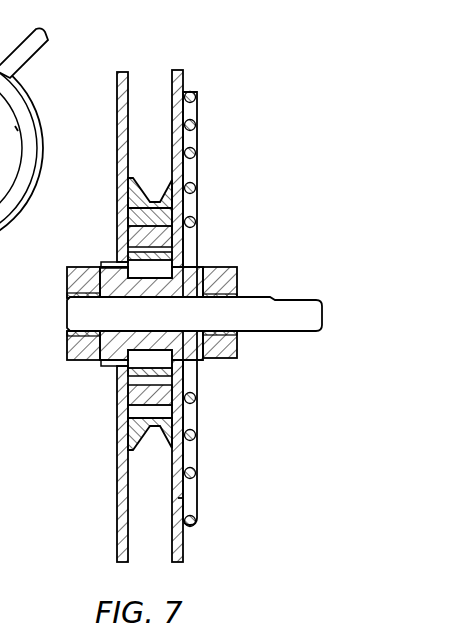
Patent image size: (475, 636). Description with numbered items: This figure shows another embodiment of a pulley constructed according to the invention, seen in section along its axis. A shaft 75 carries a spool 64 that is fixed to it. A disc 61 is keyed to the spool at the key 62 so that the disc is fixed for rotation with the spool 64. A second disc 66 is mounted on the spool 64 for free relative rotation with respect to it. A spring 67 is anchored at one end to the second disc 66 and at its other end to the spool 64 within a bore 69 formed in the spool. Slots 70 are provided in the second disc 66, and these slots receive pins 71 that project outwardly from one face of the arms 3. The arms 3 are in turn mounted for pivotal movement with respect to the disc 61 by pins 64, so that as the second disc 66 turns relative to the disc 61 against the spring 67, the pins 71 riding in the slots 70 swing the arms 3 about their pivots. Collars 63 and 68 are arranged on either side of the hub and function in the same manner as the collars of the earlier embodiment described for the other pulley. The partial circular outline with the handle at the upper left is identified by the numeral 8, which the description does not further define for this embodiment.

The arms 3 is at (163, 190).
The dial 8 is at (24, 138).
The disc 61 is at (124, 72).
The key 62 is at (110, 262).
The collar 63 is at (68, 348).
The spool 64 is at (127, 238).
The second disc 66 is at (180, 70).
The spring 67 is at (197, 97).
The collar 68 is at (236, 272).
The bore 69 is at (190, 343).
The slots 70 is at (178, 498).
The pins 71 is at (130, 412).
The shaft 75 is at (285, 298).